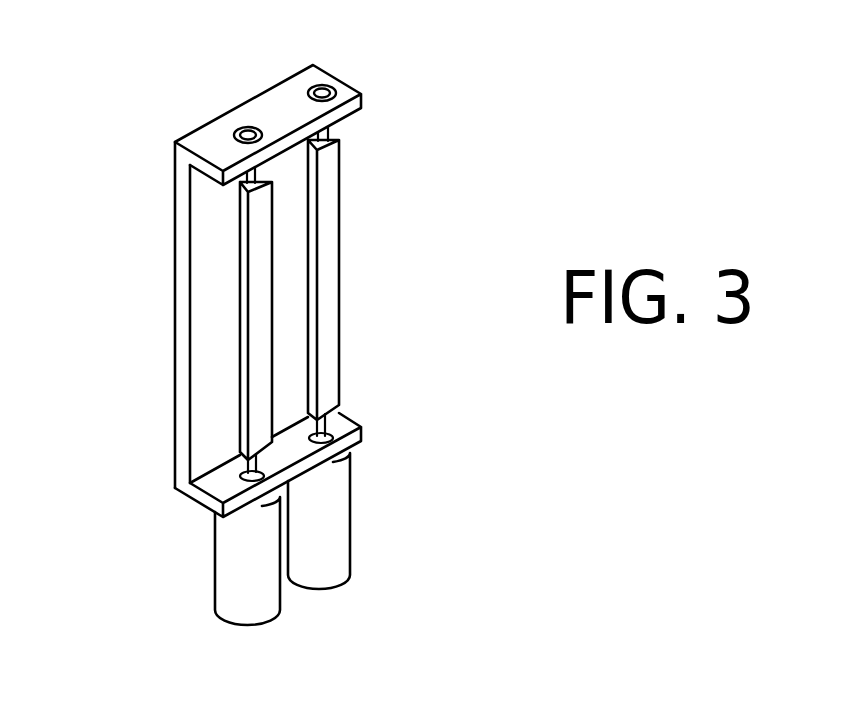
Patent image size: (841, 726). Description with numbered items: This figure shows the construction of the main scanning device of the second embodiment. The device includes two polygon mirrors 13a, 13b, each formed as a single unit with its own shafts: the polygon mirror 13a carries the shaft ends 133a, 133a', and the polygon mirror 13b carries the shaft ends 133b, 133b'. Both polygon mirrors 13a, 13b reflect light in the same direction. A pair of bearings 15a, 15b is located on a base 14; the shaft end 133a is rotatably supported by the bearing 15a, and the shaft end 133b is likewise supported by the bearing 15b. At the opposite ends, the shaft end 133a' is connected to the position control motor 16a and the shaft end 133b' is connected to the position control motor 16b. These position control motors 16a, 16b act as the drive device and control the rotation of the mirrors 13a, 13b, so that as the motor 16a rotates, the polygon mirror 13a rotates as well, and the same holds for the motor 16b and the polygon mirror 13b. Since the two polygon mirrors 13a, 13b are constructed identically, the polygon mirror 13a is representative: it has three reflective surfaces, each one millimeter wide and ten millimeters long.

The base 14 is at (288, 92).
The bearing 15a is at (340, 82).
The bearing 15b is at (236, 130).
The polygon mirror 13a is at (333, 370).
The polygon mirror 13b is at (250, 355).
The shaft end 133a is at (396, 114).
The shaft end 133b is at (158, 211).
The shaft end 133a' is at (393, 410).
The shaft end 133b' is at (163, 496).
The position control motor 16a is at (333, 538).
The position control motor 16b is at (233, 577).